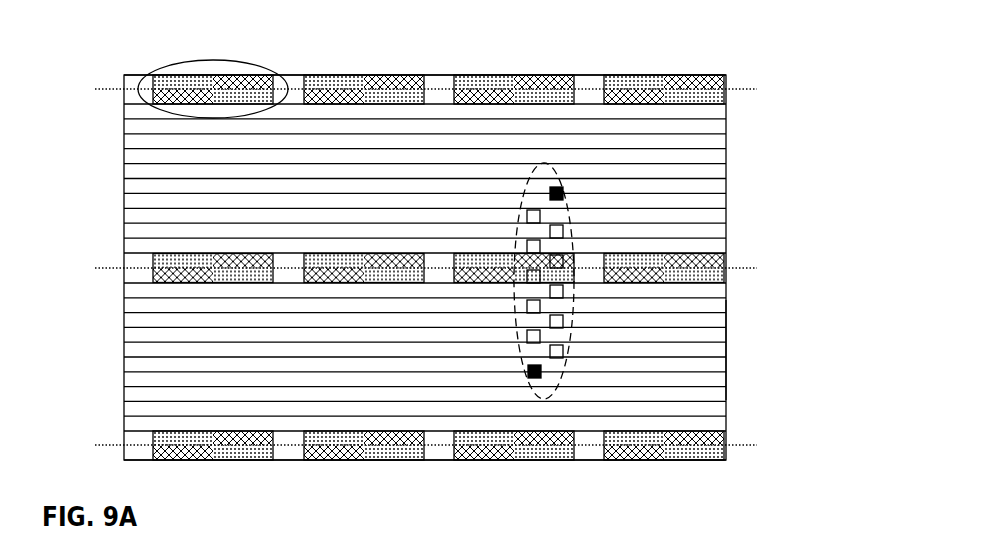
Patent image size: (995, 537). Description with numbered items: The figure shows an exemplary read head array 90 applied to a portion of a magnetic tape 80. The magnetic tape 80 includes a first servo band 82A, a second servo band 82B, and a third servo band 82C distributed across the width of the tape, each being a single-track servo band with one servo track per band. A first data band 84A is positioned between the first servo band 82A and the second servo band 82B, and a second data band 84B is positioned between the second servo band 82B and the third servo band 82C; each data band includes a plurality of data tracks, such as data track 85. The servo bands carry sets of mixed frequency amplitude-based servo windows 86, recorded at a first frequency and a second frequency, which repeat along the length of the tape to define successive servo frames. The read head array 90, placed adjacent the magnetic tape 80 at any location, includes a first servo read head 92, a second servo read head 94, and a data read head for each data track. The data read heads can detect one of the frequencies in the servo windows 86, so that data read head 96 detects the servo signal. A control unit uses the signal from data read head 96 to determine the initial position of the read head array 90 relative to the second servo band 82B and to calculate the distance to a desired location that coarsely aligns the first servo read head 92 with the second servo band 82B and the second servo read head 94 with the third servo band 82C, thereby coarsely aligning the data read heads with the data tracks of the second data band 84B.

The magnetic tape 80 is at (152, 41).
The first servo band 82A is at (758, 90).
The second servo band 82B is at (758, 268).
The third servo band 82C is at (758, 445).
The first data band 84A is at (108, 106).
The second data band 84B is at (108, 283).
The data track 85 is at (729, 349).
The mixed frequency amplitude-based servo windows 86 is at (268, 72).
The read head array 90 is at (560, 378).
The first servo read head 92 is at (571, 192).
The second servo read head 94 is at (521, 375).
The data read head 96 is at (571, 263).